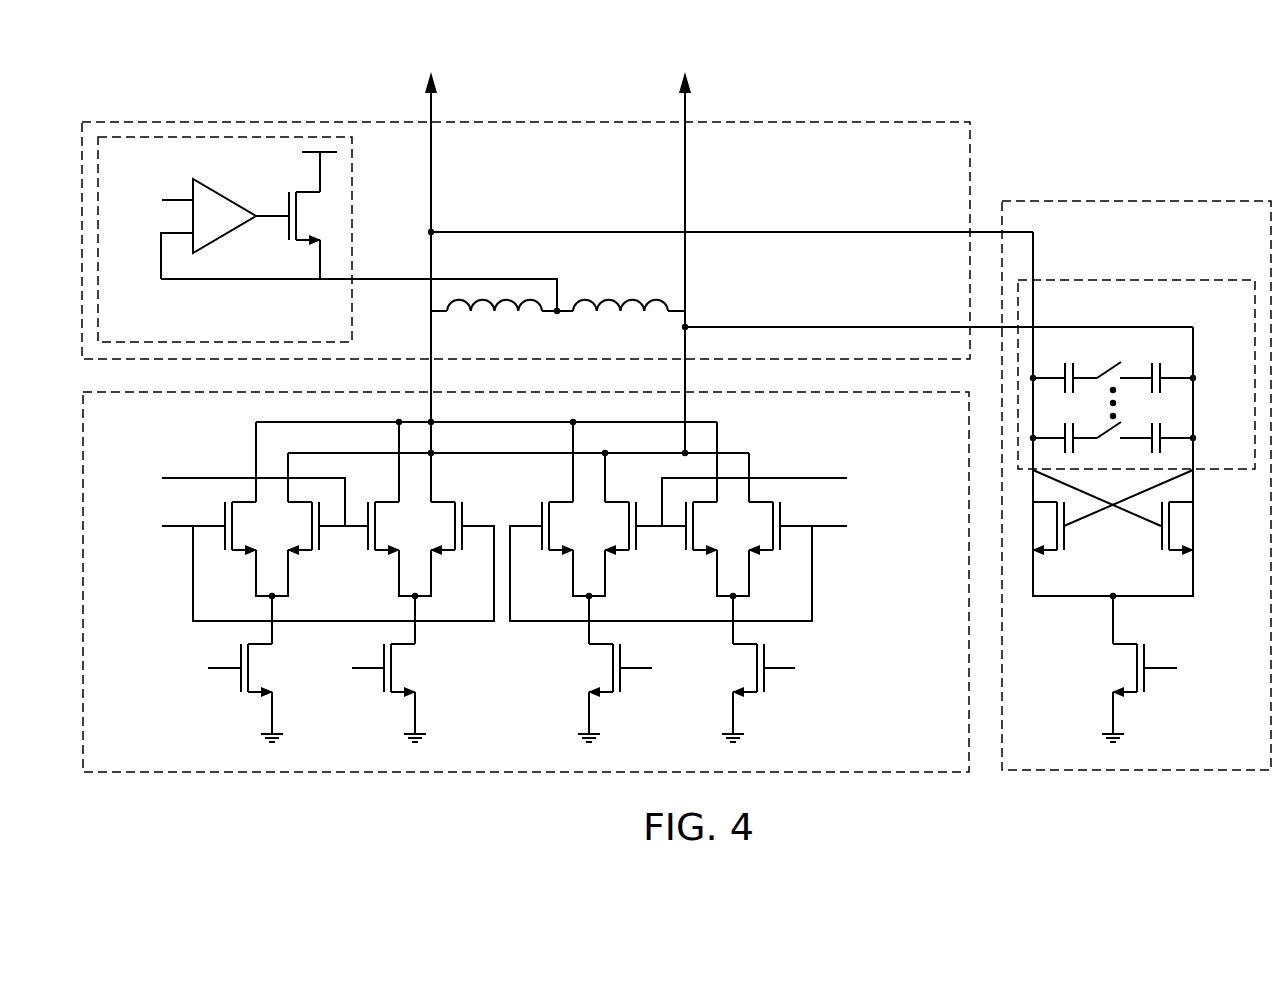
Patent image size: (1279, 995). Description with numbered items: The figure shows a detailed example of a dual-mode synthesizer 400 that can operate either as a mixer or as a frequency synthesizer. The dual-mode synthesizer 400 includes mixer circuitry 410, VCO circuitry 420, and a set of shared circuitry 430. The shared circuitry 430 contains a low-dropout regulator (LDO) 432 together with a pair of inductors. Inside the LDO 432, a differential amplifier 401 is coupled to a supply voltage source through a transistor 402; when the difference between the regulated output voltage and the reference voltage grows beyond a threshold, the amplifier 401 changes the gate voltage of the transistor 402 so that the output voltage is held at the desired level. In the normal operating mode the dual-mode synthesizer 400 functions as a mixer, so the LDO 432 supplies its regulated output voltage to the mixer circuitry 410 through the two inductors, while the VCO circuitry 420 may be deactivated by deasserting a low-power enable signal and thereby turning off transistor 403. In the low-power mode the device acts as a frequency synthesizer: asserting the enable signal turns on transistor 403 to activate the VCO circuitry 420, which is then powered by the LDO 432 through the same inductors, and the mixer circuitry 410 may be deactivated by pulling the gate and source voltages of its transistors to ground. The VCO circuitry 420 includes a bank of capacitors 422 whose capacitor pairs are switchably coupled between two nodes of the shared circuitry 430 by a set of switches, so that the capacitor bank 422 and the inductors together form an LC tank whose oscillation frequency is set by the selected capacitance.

The dual-mode synthesizer 400 is at (1133, 155).
The differential amplifier 401 is at (224, 216).
The transistor 402 is at (299, 215).
The transistor 403 is at (1119, 670).
The mixer circuitry 410 is at (526, 582).
The VCO circuitry 420 is at (1136, 485).
The bank of capacitors 422 is at (1136, 374).
The shared circuitry 430 is at (637, 262).
The low-dropout regulator 432 is at (225, 239).